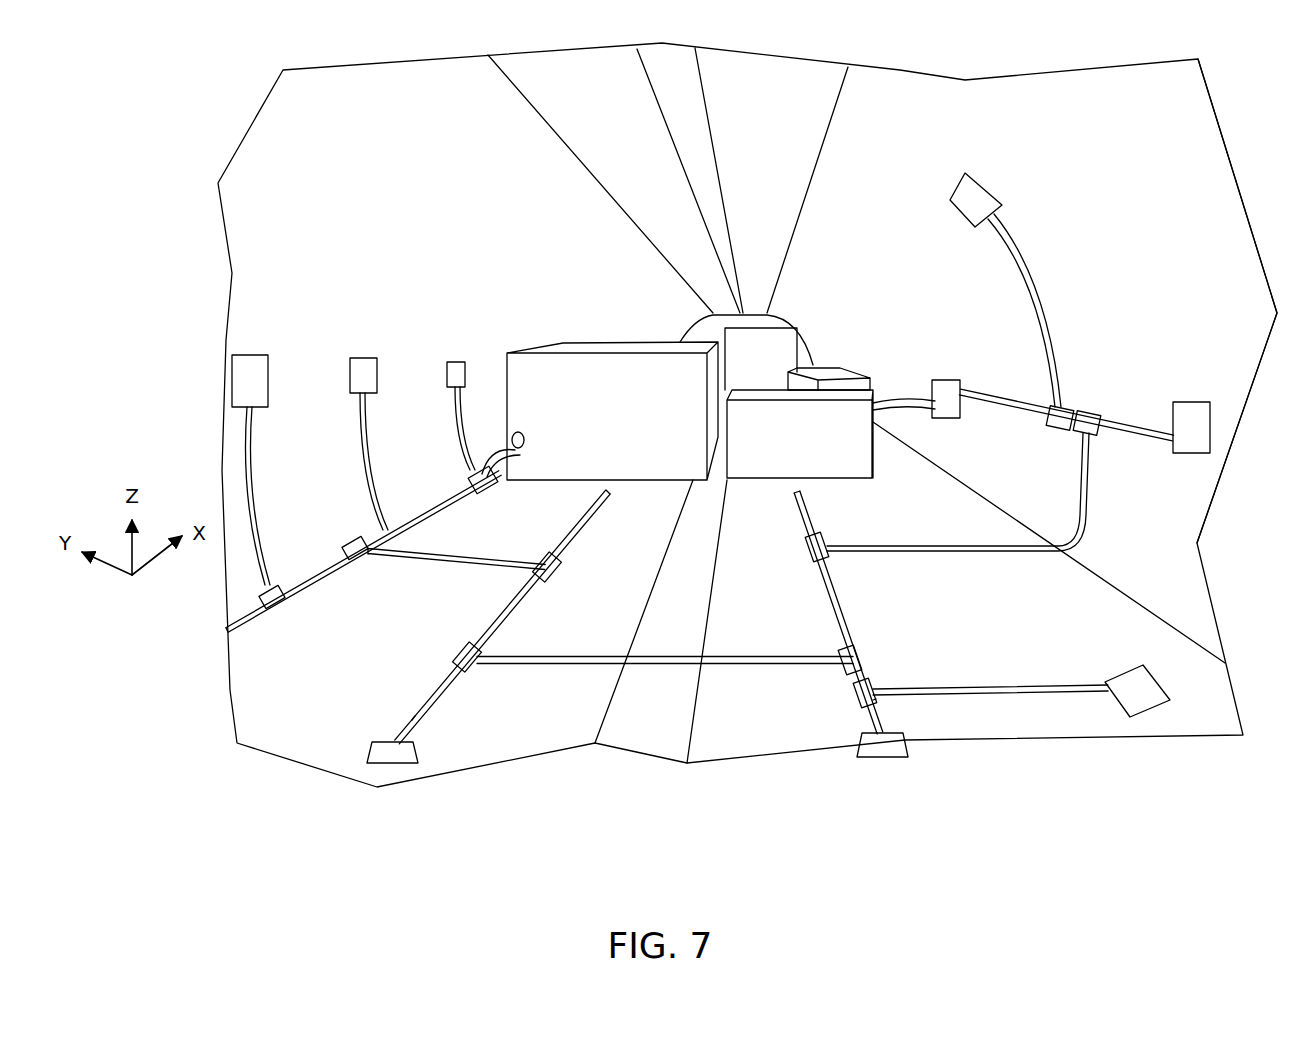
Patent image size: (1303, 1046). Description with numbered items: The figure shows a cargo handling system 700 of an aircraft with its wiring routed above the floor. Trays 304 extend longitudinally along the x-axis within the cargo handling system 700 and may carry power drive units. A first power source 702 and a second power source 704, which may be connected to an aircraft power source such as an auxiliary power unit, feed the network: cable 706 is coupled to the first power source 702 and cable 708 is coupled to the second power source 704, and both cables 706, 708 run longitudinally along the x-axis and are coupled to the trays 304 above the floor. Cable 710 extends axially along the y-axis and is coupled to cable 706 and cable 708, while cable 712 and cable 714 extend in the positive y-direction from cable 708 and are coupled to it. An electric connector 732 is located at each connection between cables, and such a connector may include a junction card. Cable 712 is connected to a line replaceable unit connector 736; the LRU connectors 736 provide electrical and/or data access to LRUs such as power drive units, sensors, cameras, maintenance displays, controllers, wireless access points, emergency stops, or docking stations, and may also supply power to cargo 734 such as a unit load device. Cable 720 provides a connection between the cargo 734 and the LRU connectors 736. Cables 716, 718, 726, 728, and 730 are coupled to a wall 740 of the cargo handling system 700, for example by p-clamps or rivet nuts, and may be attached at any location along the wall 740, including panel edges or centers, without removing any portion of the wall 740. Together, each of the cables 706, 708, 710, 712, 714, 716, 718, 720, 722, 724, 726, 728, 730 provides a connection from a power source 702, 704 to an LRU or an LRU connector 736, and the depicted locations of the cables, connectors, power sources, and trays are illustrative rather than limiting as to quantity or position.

The cargo handling system 700 is at (342, 175).
The trays 304 is at (572, 581).
The first power source 702 is at (419, 752).
The second power source 704 is at (908, 755).
The cable 706 is at (412, 716).
The cable 708 is at (876, 700).
The cable 710 is at (721, 658).
The cable 712 is at (993, 689).
The cable 714 is at (919, 544).
The cable 716 is at (1116, 421).
The cable 718 is at (1029, 272).
The cable 720 is at (902, 402).
The cable 722 is at (457, 557).
The cable 724 is at (225, 633).
The cable 726 is at (251, 506).
The cable 728 is at (364, 472).
The cable 730 is at (460, 432).
The electric connector 732 is at (383, 532).
The cargo 734 is at (782, 307).
The line replaceable unit (LRU) connector 736 is at (447, 364).
The wall 740 is at (1206, 217).